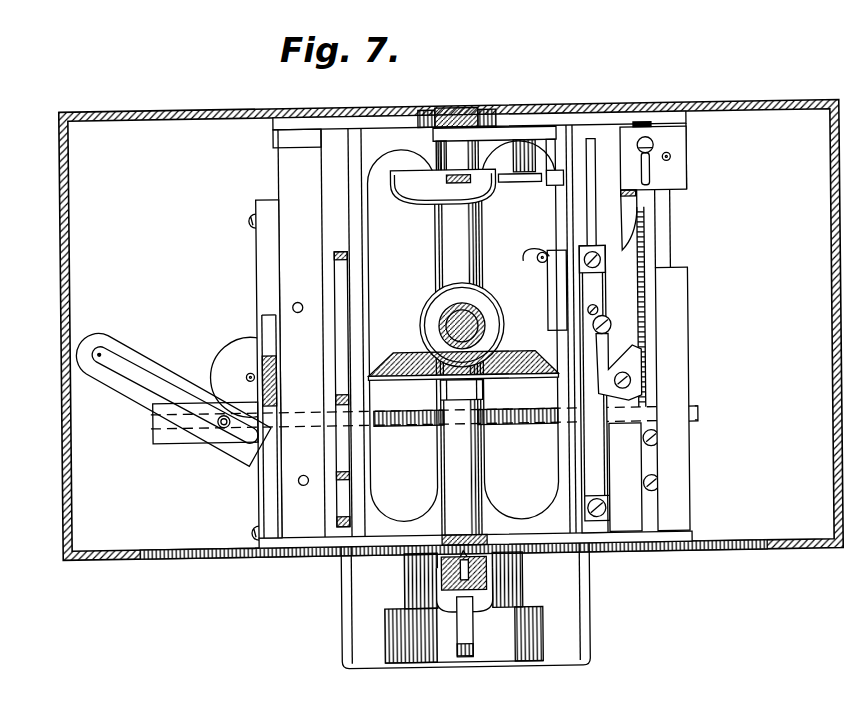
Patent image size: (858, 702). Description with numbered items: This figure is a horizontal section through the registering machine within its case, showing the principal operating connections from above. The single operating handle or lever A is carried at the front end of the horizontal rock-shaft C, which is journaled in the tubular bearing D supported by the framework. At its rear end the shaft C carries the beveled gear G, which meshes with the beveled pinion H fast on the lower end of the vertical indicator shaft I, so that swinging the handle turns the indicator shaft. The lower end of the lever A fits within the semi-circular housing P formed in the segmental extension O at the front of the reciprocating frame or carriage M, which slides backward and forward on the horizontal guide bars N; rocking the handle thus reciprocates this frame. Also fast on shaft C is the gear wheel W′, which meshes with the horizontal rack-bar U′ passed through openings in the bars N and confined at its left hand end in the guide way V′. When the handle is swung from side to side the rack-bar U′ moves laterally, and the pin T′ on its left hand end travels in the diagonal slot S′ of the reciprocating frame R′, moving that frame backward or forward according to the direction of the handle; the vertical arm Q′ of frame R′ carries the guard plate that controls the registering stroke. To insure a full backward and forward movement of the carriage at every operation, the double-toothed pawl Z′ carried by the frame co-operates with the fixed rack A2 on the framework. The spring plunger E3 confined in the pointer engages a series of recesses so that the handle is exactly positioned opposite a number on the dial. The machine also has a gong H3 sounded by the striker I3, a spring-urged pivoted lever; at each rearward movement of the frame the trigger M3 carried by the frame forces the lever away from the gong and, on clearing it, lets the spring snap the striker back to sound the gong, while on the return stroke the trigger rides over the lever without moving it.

The horizontal guide bars N is at (335, 225).
The reciprocating frame or carriage M is at (364, 270).
The trigger M3 is at (532, 250).
The gong H3 is at (454, 198).
The striker I3 is at (510, 184).
The beveled pinion H is at (433, 302).
The vertical indicator shaft I is at (440, 318).
The beveled gear G is at (400, 354).
The horizontal rock-shaft C is at (443, 402).
The gear wheel W′ is at (520, 405).
The horizontal rack-bar U′ is at (387, 426).
The tubular bearing D is at (453, 475).
The spring plunger E3 is at (463, 563).
The fixed rack A2 is at (647, 328).
The double-toothed pawl Z′ is at (628, 388).
The diagonal slot S′ is at (132, 368).
The reciprocating frame R′ is at (178, 373).
The guide way V′ is at (160, 420).
The pin T′ is at (223, 425).
The vertical arm Q′ is at (280, 364).
The segmental extension O is at (588, 578).
The operating handle or lever A is at (465, 632).
The semi-circular housing P is at (508, 646).